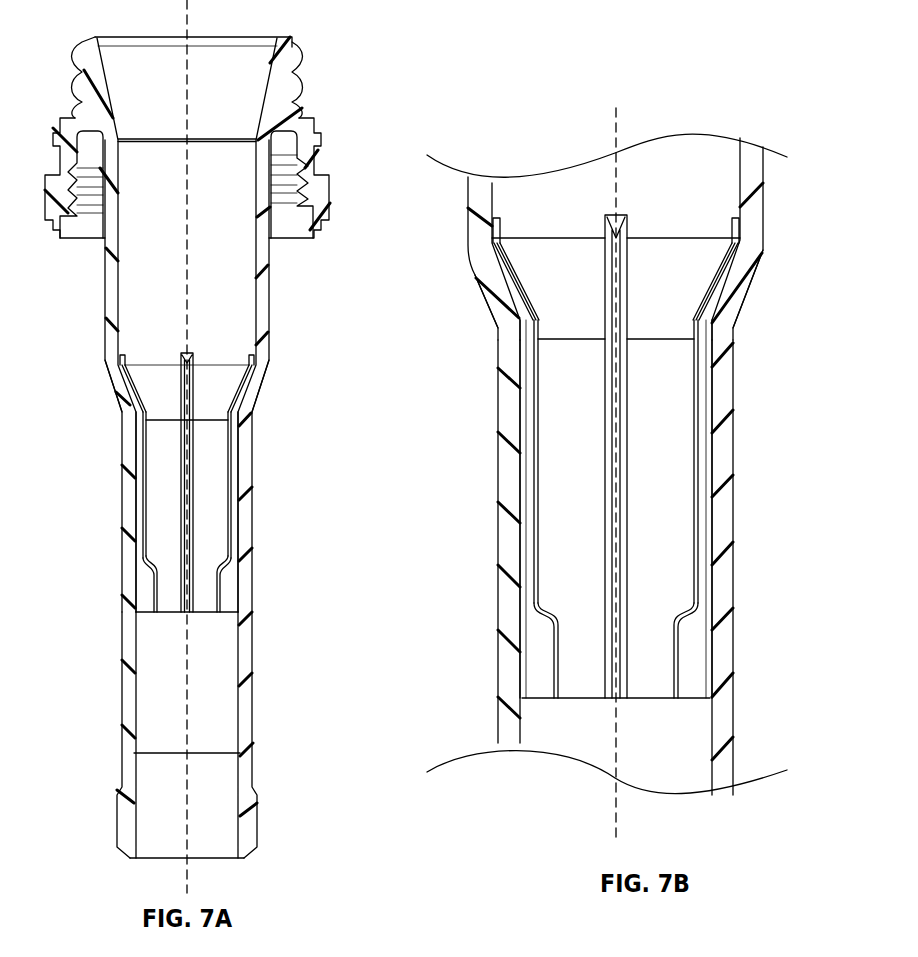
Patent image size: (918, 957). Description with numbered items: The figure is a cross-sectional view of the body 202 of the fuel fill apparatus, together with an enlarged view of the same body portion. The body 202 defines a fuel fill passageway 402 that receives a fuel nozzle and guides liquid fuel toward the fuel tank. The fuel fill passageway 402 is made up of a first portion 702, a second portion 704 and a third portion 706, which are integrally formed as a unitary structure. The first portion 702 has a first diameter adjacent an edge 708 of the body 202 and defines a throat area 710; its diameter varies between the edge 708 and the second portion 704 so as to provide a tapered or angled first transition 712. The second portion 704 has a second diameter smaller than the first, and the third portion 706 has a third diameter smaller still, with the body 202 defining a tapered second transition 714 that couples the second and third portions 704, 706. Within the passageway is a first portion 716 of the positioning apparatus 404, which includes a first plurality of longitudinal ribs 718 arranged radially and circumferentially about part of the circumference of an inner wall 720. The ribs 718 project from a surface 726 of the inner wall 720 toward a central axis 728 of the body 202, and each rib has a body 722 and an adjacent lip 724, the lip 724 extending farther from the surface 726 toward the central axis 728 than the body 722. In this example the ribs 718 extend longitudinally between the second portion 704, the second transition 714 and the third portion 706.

In FIG. 7A, the body 202 is at (383, 40).
In FIG. 7B, the body 202 is at (732, 66).
In FIG. 7A, the fuel fill passageway 402 is at (138, 314).
In FIG. 7B, the fuel fill passageway 402 is at (515, 208).
In FIG. 7A, the positioning apparatus 404 is at (124, 436).
In FIG. 7B, the positioning apparatus 404 is at (569, 365).
In FIG. 7A, the first portion 702 is at (268, 85).
In FIG. 7A, the second portion 704 is at (263, 245).
In FIG. 7B, the second portion 704 is at (763, 210).
In FIG. 7A, the third portion 706 is at (254, 690).
In FIG. 7B, the third portion 706 is at (732, 662).
In FIG. 7A, the edge 708 is at (97, 40).
In FIG. 7A, the throat area 710 is at (167, 98).
In FIG. 7A, the first transition 712 is at (100, 70).
In FIG. 7A, the second transition 714 is at (258, 393).
In FIG. 7B, the second transition 714 is at (762, 290).
In FIG. 7A, the first portion of the positioning apparatus 716 is at (260, 432).
In FIG. 7B, the first portion of the positioning apparatus 716 is at (524, 249).
In FIG. 7A, the first plurality of ribs 718 is at (137, 490).
In FIG. 7B, the first plurality of ribs 718 is at (627, 467).
In FIG. 7A, the inner wall 720 is at (133, 458).
In FIG. 7B, the inner wall 720 is at (507, 490).
In FIG. 7A, the body of the ribs 722 is at (143, 530).
In FIG. 7B, the body of the ribs 722 is at (532, 567).
In FIG. 7A, the lip 724 is at (148, 592).
In FIG. 7B, the lip 724 is at (538, 650).
In FIG. 7A, the surface 726 is at (213, 482).
In FIG. 7B, the surface 726 is at (663, 397).
In FIG. 7A, the central axis 728 is at (187, 841).
In FIG. 7B, the central axis 728 is at (615, 810).